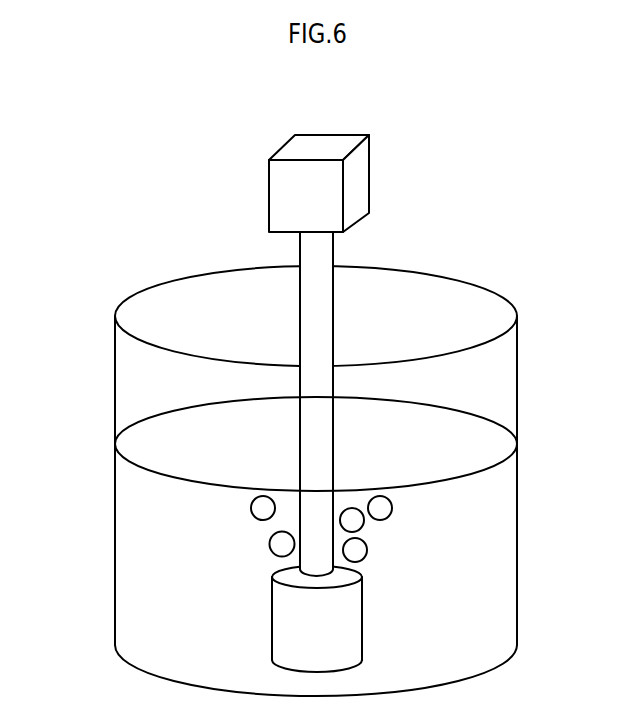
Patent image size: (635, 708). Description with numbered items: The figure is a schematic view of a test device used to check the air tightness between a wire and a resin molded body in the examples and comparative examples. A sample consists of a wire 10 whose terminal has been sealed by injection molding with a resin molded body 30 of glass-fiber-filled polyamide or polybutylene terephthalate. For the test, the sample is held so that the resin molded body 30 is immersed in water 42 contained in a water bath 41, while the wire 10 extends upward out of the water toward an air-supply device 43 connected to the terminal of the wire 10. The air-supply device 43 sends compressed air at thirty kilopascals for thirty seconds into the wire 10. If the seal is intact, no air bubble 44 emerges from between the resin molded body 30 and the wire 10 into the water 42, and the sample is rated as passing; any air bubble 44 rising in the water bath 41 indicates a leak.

The wire 10 is at (321, 305).
The resin molded body 30 is at (335, 608).
The water bath 41 is at (120, 303).
The water 42 is at (132, 488).
The air-supply device 43 is at (358, 173).
The air bubble 44 is at (385, 507).